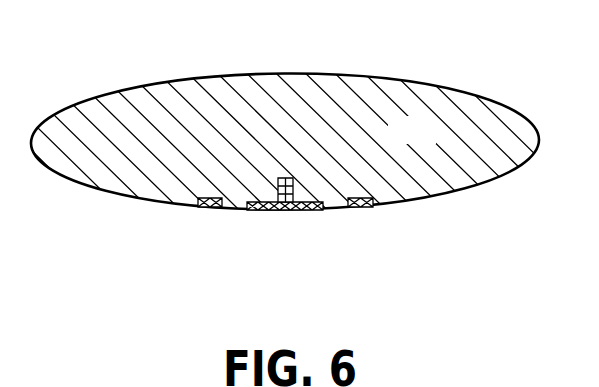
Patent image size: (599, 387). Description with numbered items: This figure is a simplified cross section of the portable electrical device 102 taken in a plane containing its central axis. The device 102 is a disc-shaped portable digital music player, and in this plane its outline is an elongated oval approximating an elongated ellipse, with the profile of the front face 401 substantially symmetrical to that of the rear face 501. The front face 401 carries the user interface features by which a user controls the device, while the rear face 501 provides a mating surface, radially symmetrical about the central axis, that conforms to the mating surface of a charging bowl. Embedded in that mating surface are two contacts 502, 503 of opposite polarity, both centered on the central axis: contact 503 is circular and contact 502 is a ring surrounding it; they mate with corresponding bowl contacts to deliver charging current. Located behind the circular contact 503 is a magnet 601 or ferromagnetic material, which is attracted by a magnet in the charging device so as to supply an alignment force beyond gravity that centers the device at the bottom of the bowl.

The front face 401 is at (361, 72).
The portable electrical device 102 is at (433, 142).
The rear face 501 is at (420, 205).
The contact 502 is at (207, 208).
The contact 503 is at (287, 210).
The magnet 601 is at (293, 185).